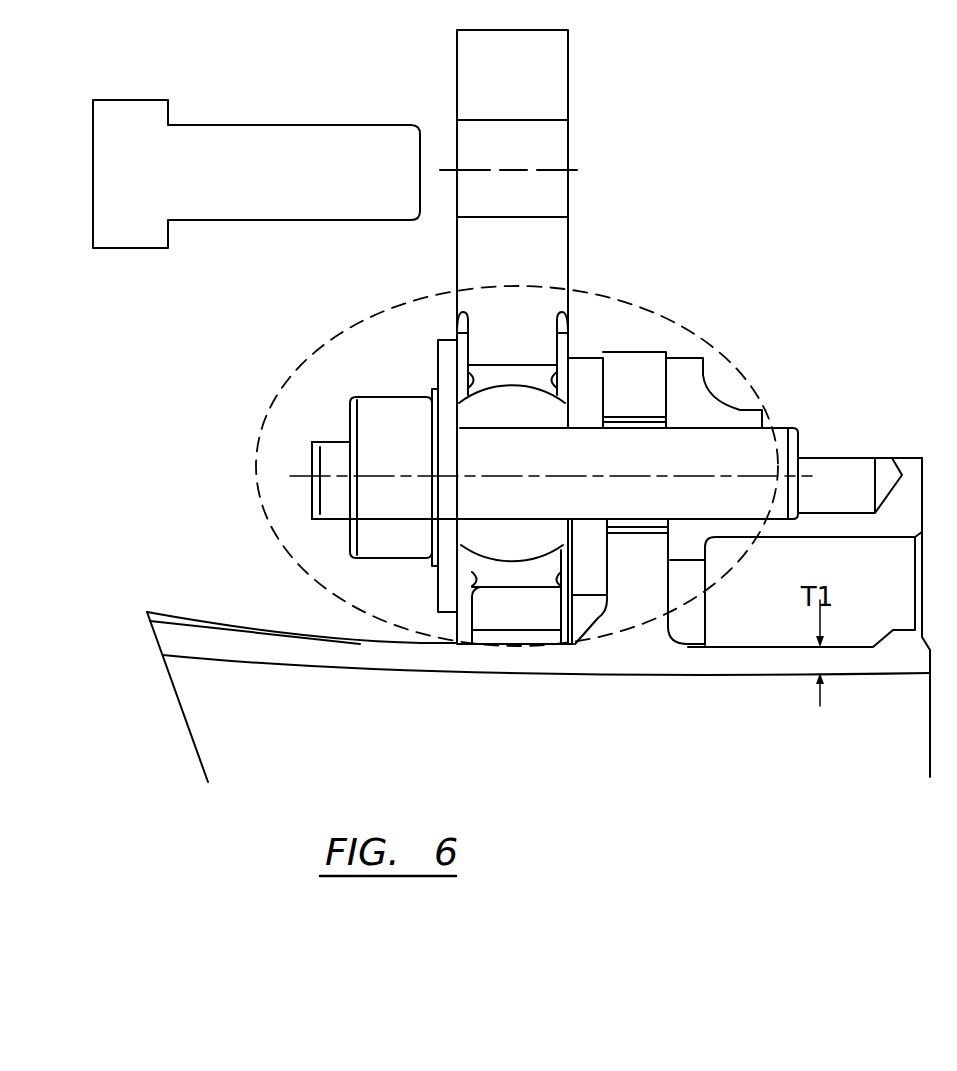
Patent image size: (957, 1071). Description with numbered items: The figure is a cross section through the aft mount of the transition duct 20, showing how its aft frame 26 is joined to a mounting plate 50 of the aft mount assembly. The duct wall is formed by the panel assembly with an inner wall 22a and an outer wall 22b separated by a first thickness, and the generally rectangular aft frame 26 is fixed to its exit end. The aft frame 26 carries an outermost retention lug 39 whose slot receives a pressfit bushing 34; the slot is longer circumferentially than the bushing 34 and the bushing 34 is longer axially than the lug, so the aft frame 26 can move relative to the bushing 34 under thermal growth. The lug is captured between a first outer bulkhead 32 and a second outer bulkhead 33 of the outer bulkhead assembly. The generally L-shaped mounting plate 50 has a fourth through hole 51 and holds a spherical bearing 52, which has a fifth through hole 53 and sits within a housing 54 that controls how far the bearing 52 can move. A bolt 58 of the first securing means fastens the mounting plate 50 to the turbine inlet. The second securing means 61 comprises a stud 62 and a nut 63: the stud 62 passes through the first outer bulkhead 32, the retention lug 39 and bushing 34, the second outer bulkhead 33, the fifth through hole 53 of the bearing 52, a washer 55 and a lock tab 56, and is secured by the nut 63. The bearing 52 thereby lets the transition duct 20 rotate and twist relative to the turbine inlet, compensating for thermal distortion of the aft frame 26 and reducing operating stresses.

The transition duct 20 is at (178, 595).
The inner wall 22a is at (790, 675).
The outer wall 22b is at (740, 645).
The aft frame 26 is at (848, 665).
The first outer bulkhead 32 is at (679, 421).
The second outer bulkhead 33 is at (576, 410).
The bushing 34 is at (636, 426).
The outermost retention lug 39 is at (624, 408).
The mounting plate 50 is at (500, 90).
The fourth through hole 51 is at (500, 205).
The spherical bearing 52 is at (501, 421).
The fifth through hole 53 is at (540, 520).
The housing 54 is at (506, 378).
The washer 55 is at (447, 356).
The lock tab 56 is at (432, 405).
The bolt 58 is at (130, 205).
The second securing means 61 is at (318, 406).
The stud 62 is at (783, 427).
The nut 63 is at (382, 426).